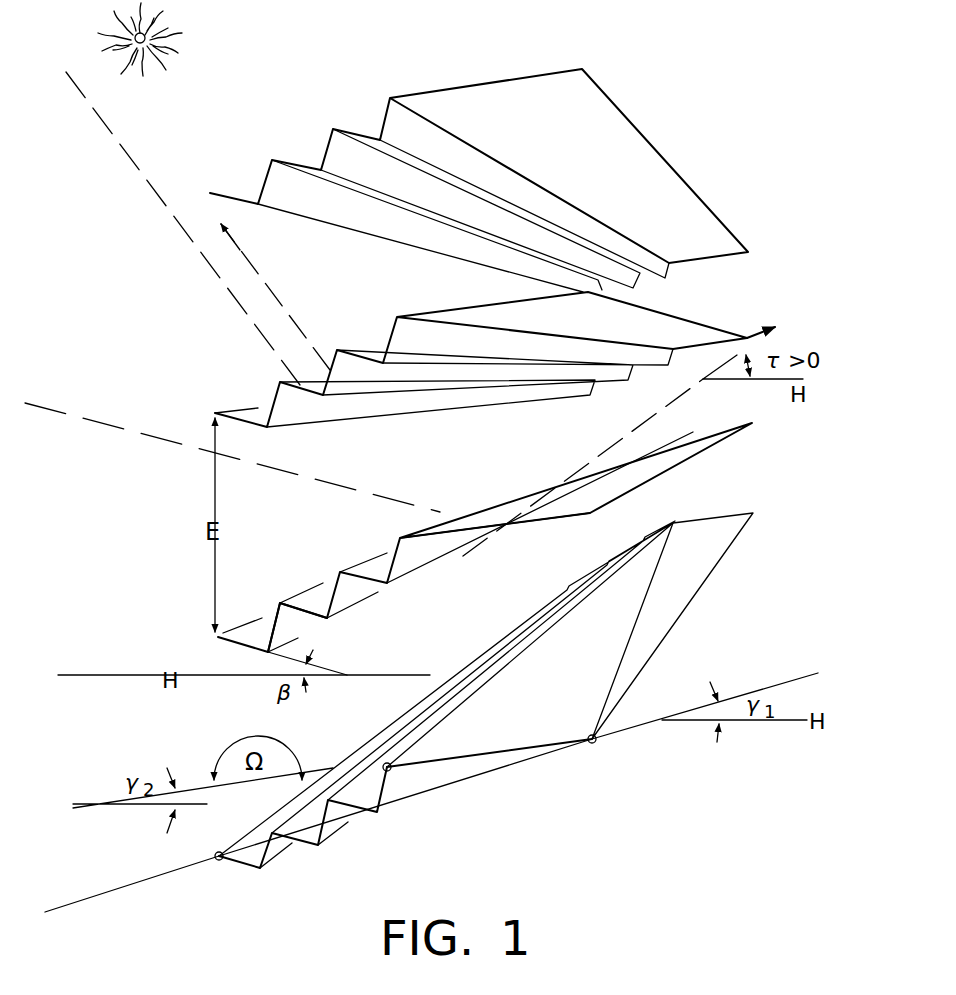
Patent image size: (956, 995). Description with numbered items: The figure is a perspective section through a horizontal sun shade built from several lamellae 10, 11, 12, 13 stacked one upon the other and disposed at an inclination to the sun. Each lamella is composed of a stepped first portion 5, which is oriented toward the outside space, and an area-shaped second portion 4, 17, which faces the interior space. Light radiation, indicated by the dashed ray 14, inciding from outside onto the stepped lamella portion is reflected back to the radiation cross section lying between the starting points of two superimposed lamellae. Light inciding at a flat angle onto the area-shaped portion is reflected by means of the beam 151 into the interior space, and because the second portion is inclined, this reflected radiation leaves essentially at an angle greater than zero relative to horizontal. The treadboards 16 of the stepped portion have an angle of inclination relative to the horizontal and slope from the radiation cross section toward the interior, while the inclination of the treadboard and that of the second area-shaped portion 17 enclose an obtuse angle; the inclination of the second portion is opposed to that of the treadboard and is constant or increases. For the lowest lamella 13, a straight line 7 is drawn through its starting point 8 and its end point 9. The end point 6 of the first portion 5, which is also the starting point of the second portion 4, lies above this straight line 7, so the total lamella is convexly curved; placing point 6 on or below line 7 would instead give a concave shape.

The second portion 4 is at (431, 716).
The first portion 5 is at (358, 831).
The end point of the first portion 6 is at (406, 757).
The straight line 7 is at (450, 787).
The starting point 8 is at (215, 855).
The end point 9 is at (597, 745).
The lamella 10 is at (722, 222).
The lamella 11 is at (703, 320).
The lamella 12 is at (485, 529).
The lamella 13 is at (715, 514).
The incident light ray 14 is at (128, 160).
The treadboards 16 is at (238, 624).
The second area-shaped portion 17 is at (563, 525).
The beam 151 is at (613, 438).